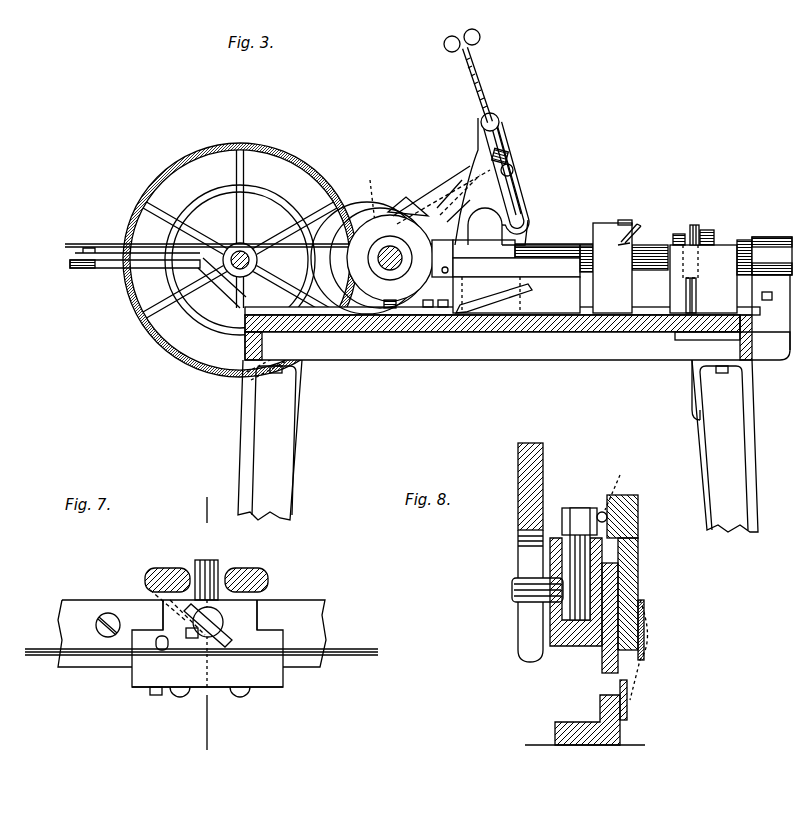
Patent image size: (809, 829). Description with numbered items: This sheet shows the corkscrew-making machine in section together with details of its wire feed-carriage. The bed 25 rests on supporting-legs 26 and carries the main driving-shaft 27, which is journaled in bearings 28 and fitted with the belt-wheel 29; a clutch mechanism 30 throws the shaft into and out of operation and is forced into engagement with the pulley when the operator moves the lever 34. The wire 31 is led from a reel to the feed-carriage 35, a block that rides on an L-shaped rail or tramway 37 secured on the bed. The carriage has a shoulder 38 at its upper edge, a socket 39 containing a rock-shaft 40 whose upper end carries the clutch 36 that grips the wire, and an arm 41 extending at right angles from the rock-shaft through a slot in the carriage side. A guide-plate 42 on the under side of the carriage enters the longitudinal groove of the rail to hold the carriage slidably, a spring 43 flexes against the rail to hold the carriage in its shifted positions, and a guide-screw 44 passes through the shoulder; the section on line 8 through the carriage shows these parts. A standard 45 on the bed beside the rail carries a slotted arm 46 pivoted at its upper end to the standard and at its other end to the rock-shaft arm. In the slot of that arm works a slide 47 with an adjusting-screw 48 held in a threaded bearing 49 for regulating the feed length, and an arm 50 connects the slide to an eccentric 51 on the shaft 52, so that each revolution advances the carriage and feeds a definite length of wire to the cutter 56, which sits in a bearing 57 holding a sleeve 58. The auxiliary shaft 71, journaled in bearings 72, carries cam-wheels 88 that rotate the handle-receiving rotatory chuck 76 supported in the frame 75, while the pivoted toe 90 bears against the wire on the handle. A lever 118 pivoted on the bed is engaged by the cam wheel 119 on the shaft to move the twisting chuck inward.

In FIG. 3, the bed 25 is at (497, 332).
In FIG. 3, the supporting-legs 26 is at (292, 455).
In FIG. 3, the main driving-shaft 27 is at (248, 244).
In FIG. 3, the bearings 28 is at (222, 318).
In FIG. 3, the belt-wheel 29 is at (230, 160).
In FIG. 3, the clutch mechanism 30 is at (205, 200).
In FIG. 3, the wire 31 is at (108, 252).
In FIG. 7, the wire 31 is at (201, 643).
In FIG. 8, the wire 31 is at (618, 484).
In FIG. 3, the lever 34 is at (112, 252).
In FIG. 3, the feed-carriage 35 is at (443, 257).
In FIG. 7, the feed-carriage 35 is at (210, 643).
In FIG. 8, the feed-carriage 35 is at (638, 558).
In FIG. 7, the clutch 36 is at (225, 640).
In FIG. 8, the clutch 36 is at (597, 505).
In FIG. 3, the rail or tramway 37 is at (501, 276).
In FIG. 7, the rail or tramway 37 is at (192, 643).
In FIG. 8, the rail or tramway 37 is at (602, 663).
In FIG. 7, the shoulder 38 is at (207, 681).
In FIG. 8, the shoulder 38 is at (630, 494).
In FIG. 7, the socket 39 is at (161, 606).
In FIG. 7, the rock-shaft 40 is at (190, 622).
In FIG. 8, the rock-shaft 40 is at (583, 508).
In FIG. 7, the arm 41 is at (203, 559).
In FIG. 8, the arm 41 is at (511, 590).
In FIG. 8, the guide-plate 42 is at (642, 655).
In FIG. 7, the spring 43 is at (209, 703).
In FIG. 8, the spring 43 is at (628, 690).
In FIG. 7, the guide-screw 44 is at (150, 648).
In FIG. 3, the standard 45 is at (491, 181).
In FIG. 3, the slotted arm 46 is at (467, 198).
In FIG. 7, the slotted arm 46 is at (206, 570).
In FIG. 8, the slotted arm 46 is at (543, 480).
In FIG. 3, the slide 47 is at (510, 158).
In FIG. 3, the adjusting-screw 48 is at (481, 77).
In FIG. 3, the threaded bearing 49 is at (500, 122).
In FIG. 3, the arm 50 is at (428, 210).
In FIG. 3, the eccentric 51 is at (345, 215).
In FIG. 3, the shaft 52 is at (391, 214).
In FIG. 3, the cutter 56 is at (621, 246).
In FIG. 3, the bearing 57 is at (606, 223).
In FIG. 3, the sleeve 58 is at (638, 228).
In FIG. 3, the auxiliary shaft 71 is at (558, 243).
In FIG. 3, the bearings 72 is at (775, 236).
In FIG. 3, the frame 75 is at (703, 279).
In FIG. 3, the rotatory chuck 76 is at (697, 294).
In FIG. 3, the cam-wheels 88 is at (678, 233).
In FIG. 3, the pivoted toe 90 is at (694, 224).
In FIG. 3, the lever 118 is at (483, 303).
In FIG. 3, the cam wheel 119 is at (378, 195).
In FIG. 7, the section line 8 is at (214, 623).